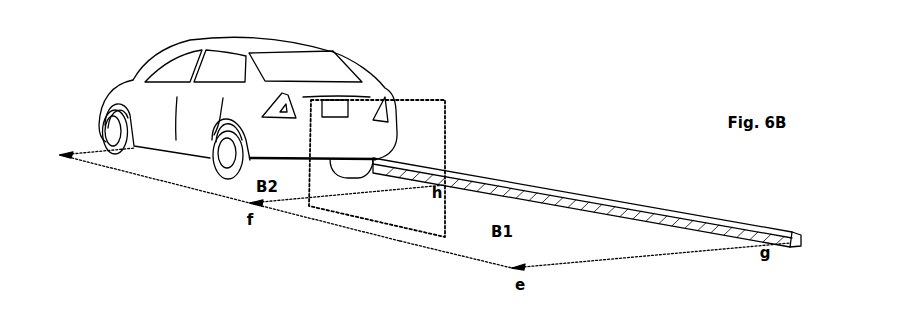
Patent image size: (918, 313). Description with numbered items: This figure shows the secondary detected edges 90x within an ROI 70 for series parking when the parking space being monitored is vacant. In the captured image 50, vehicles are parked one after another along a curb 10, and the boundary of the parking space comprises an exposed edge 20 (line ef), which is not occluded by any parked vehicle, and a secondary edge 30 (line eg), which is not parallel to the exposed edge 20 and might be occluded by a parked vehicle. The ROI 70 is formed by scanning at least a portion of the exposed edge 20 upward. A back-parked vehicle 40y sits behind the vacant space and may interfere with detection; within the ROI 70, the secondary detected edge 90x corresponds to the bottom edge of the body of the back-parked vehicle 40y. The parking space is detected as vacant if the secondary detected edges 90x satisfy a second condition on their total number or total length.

The curb 10 is at (740, 227).
The exposed edge 20 is at (338, 227).
The secondary edge 30 is at (378, 193).
The back-parked vehicle 40y is at (305, 66).
The image 50 is at (463, 254).
The ROI 70 is at (448, 102).
The secondary detected edges 90x is at (340, 160).